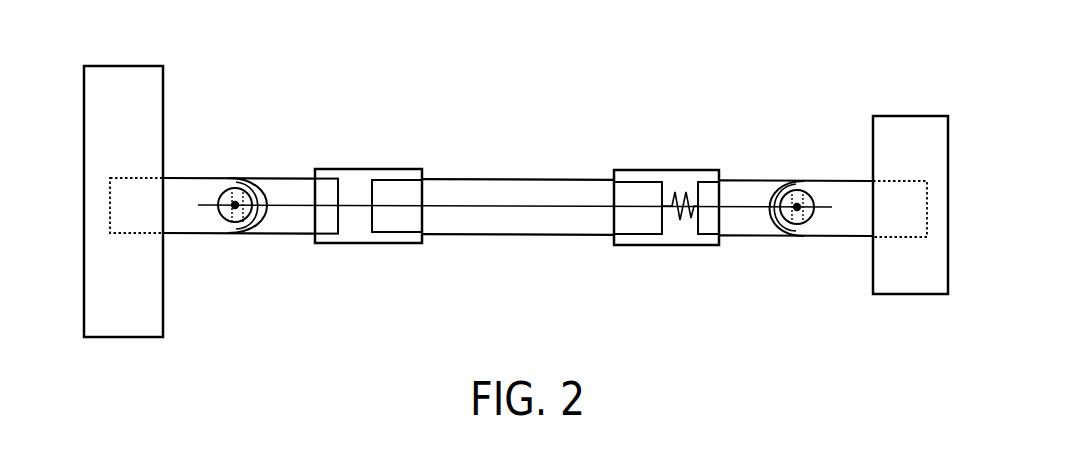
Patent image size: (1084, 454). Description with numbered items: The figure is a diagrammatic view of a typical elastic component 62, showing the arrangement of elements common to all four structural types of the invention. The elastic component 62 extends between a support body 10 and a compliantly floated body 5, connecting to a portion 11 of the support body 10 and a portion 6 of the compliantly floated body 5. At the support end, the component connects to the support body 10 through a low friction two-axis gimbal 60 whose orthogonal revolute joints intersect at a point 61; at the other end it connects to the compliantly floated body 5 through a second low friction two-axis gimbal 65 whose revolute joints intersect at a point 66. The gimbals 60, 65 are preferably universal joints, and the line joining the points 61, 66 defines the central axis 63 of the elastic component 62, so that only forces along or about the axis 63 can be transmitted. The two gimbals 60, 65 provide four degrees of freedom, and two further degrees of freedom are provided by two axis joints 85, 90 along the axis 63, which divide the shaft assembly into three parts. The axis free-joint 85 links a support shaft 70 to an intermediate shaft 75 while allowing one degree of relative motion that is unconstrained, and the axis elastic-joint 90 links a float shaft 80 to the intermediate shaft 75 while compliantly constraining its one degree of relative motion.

The compliantly floated body 5 is at (910, 171).
The portion of compliantly floated body 6 is at (845, 238).
The support body 10 is at (132, 111).
The portion of support body 11 is at (177, 177).
The 2-axis gimbal 60 is at (228, 242).
The point 61 is at (240, 197).
The elastic component 62 is at (556, 140).
The central axis 63 is at (546, 213).
The 2-axis gimbal 65 is at (790, 242).
The point 66 is at (800, 196).
The support shaft 70 is at (289, 166).
The intermediate shaft 75 is at (527, 176).
The float shaft 80 is at (755, 178).
The axis free-joint 85 is at (340, 248).
The axis elastic-joint 90 is at (633, 248).